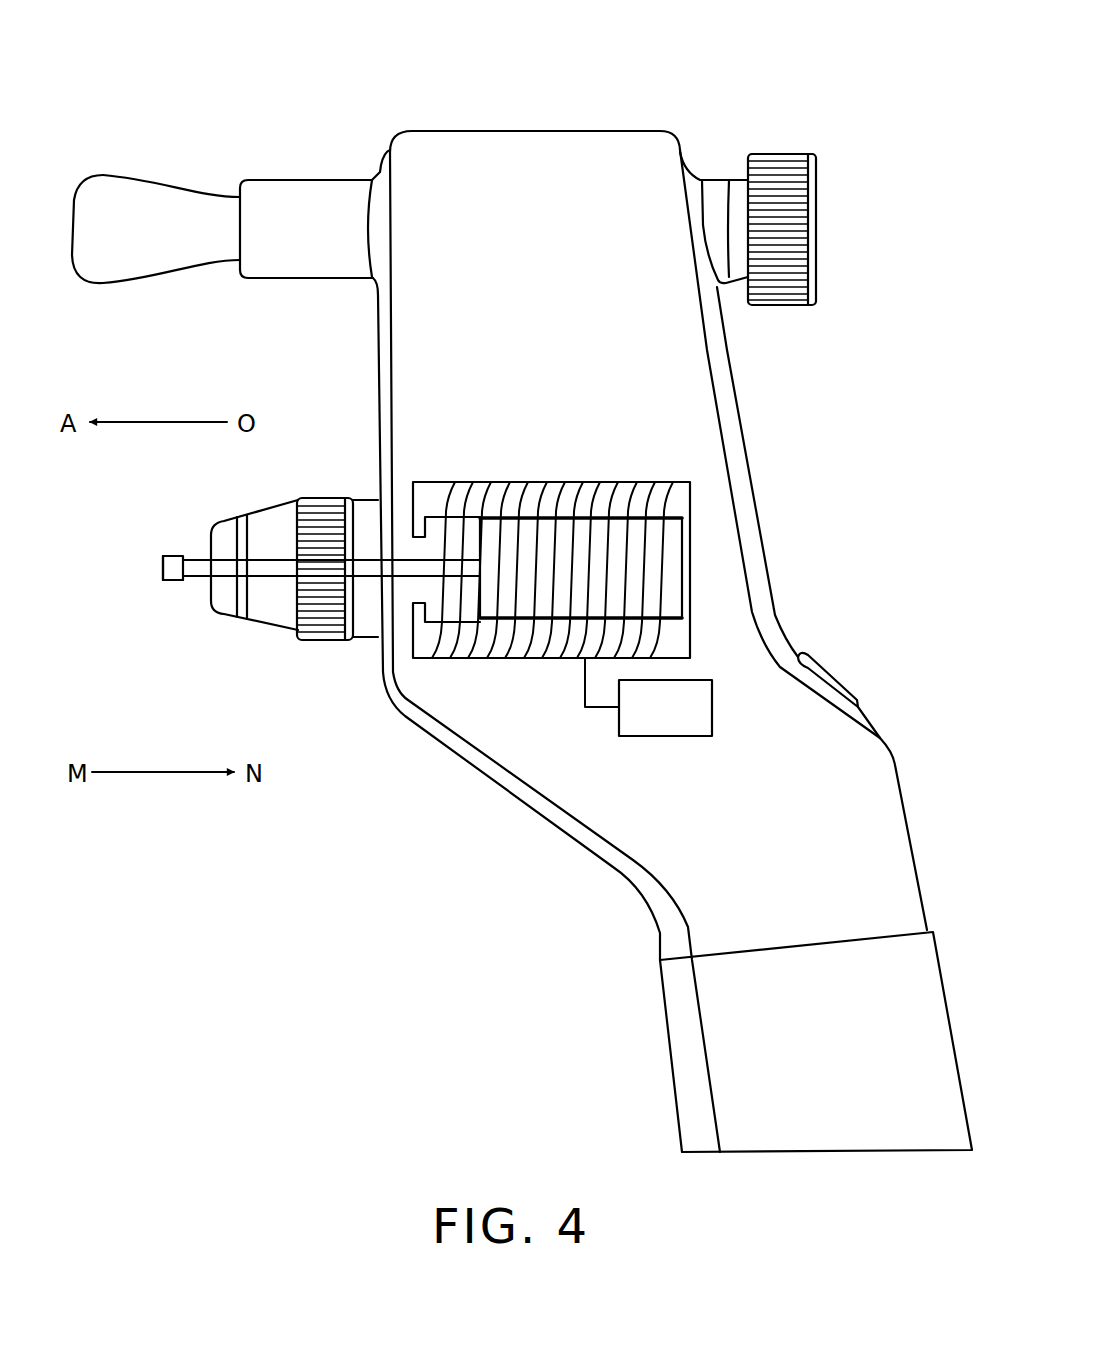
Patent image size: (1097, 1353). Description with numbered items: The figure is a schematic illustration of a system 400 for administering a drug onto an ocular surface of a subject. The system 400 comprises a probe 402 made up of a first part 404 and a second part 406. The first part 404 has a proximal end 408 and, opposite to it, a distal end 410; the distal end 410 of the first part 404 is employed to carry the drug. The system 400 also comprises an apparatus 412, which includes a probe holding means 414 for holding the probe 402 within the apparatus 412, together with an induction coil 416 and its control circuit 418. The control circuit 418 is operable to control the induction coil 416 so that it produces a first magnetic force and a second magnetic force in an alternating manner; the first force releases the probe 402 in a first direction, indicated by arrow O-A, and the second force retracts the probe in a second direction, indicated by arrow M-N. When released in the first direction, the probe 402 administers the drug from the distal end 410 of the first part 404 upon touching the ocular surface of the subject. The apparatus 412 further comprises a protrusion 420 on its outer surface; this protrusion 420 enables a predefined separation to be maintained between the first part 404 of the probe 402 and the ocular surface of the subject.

The system 400 is at (691, 61).
The probe 402 is at (325, 598).
The first part 404 is at (147, 516).
The second part 406 is at (331, 519).
The proximal end 408 is at (138, 631).
The distal end 410 is at (109, 597).
The apparatus 412 is at (305, 613).
The probe holding means 414 is at (636, 549).
The induction coil 416 is at (664, 557).
The control circuit 418 is at (648, 697).
The protrusion 420 is at (222, 273).